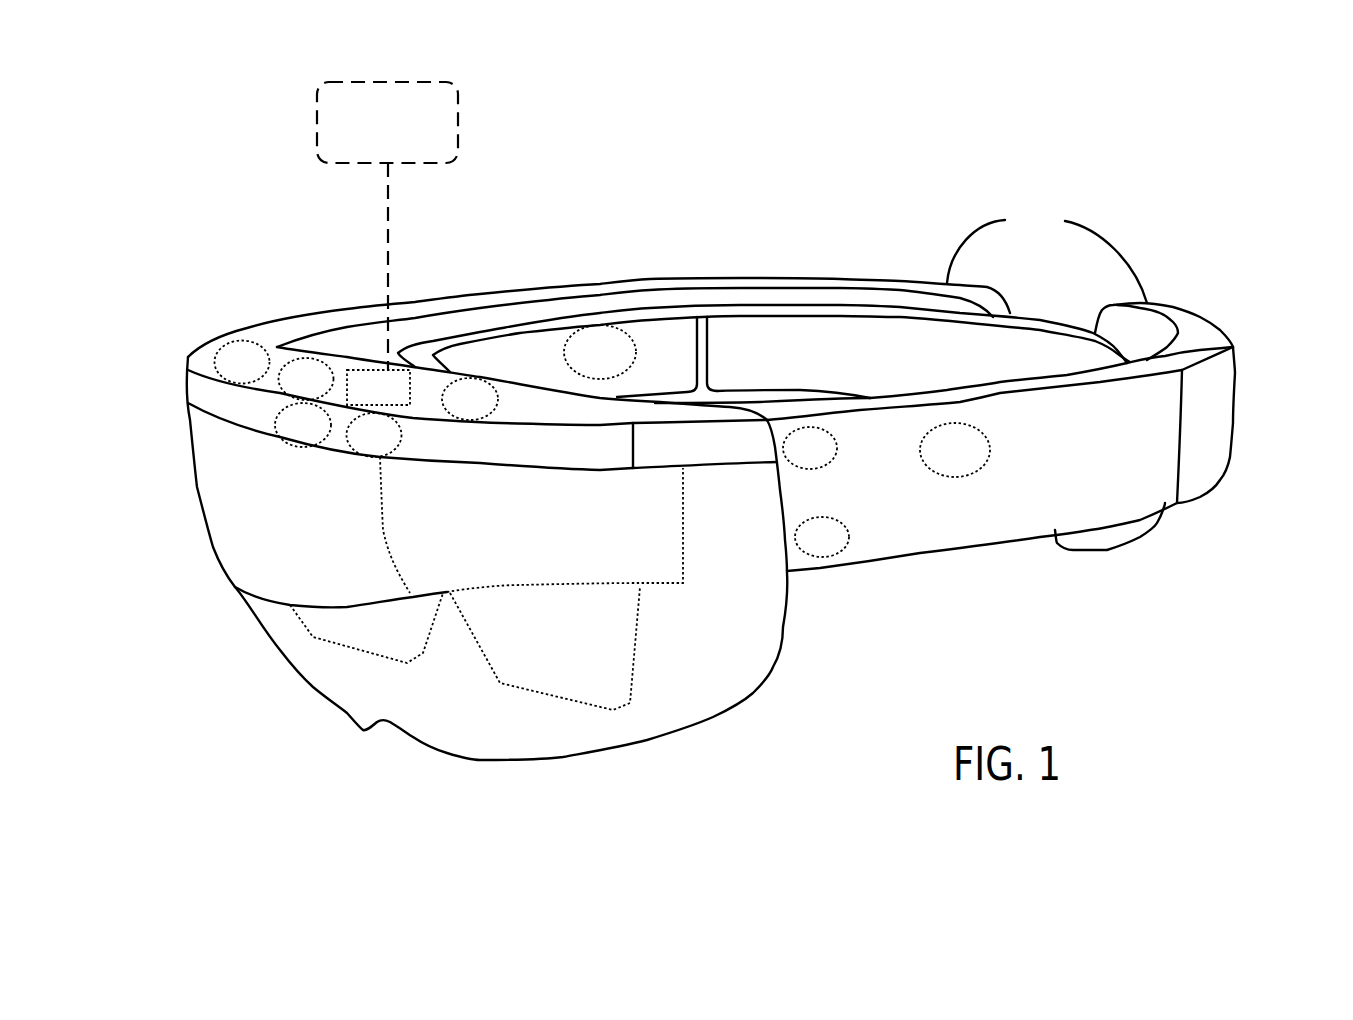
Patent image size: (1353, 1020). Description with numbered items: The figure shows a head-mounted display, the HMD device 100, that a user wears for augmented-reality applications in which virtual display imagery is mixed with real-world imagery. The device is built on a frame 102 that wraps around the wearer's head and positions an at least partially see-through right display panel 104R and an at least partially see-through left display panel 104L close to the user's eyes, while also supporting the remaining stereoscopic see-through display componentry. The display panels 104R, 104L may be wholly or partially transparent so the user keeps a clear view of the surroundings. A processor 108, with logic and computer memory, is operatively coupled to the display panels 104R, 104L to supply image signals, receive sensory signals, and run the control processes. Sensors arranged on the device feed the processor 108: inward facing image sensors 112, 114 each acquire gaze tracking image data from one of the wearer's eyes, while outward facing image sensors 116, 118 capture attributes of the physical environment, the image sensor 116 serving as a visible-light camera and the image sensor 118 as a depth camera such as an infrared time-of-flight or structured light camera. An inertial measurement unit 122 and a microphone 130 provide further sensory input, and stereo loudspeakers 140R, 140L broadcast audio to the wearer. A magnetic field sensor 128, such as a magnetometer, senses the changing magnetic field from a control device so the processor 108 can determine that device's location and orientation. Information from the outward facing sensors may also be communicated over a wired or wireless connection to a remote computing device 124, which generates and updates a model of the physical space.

The HMD device 100 is at (172, 277).
The frame 102 is at (933, 529).
The right display panel 104R is at (363, 644).
The left display panel 104L is at (563, 691).
The processor 108 is at (359, 399).
The inward facing image sensor 112 is at (451, 410).
The inward facing image sensor 114 is at (287, 390).
The outward facing image sensor 116 is at (284, 436).
The outward facing image sensor 118 is at (355, 446).
The inertial measurement unit 122 is at (791, 459).
The remote computing device 124 is at (444, 145).
The magnetic field sensor 128 is at (223, 373).
The microphone 130 is at (803, 548).
The right stereo loudspeaker 140R is at (573, 363).
The left stereo loudspeaker 140L is at (929, 461).